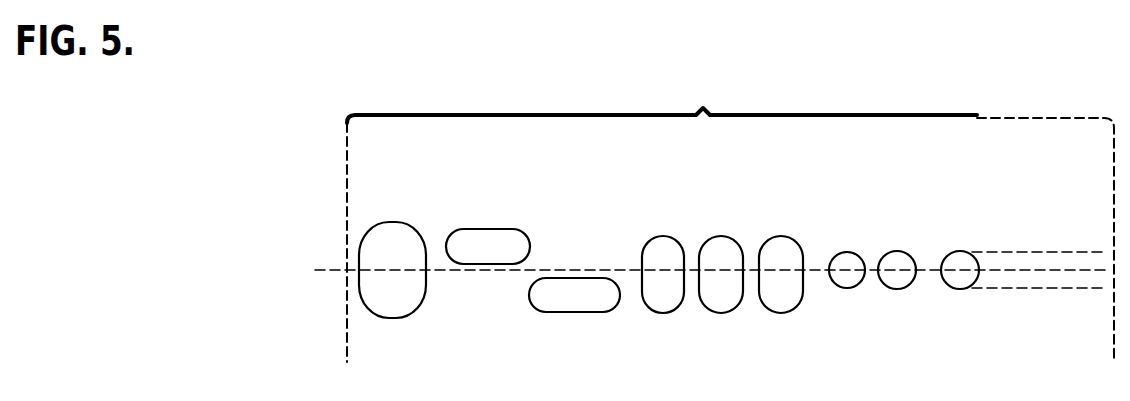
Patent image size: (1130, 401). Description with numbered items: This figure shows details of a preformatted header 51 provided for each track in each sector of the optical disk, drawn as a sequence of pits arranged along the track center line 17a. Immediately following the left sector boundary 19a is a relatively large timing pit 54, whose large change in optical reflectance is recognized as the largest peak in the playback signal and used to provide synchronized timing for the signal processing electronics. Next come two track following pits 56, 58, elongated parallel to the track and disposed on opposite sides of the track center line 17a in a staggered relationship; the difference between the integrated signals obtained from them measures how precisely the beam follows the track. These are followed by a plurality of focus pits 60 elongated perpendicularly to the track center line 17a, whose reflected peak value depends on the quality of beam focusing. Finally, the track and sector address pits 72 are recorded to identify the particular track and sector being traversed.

The left sector boundary 19a is at (347, 183).
The track center line 17a is at (312, 269).
The preformatted header 51 is at (662, 96).
The timing pit 54 is at (383, 229).
The track following pit 56 is at (461, 236).
The track following pit 58 is at (563, 304).
The focus pits 60 is at (810, 312).
The track and sector address pits 72 is at (992, 243).